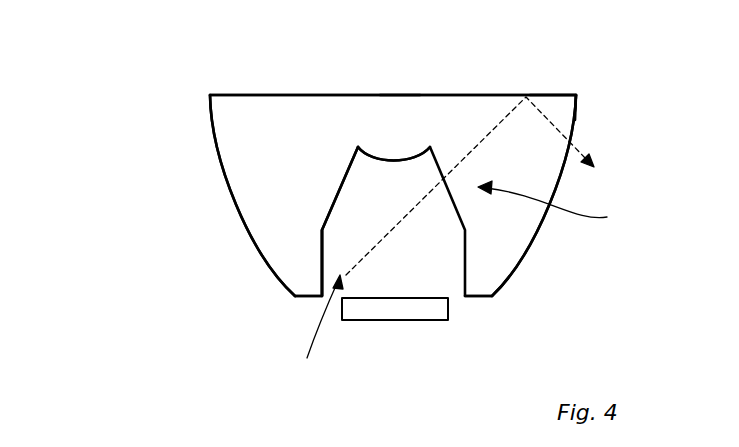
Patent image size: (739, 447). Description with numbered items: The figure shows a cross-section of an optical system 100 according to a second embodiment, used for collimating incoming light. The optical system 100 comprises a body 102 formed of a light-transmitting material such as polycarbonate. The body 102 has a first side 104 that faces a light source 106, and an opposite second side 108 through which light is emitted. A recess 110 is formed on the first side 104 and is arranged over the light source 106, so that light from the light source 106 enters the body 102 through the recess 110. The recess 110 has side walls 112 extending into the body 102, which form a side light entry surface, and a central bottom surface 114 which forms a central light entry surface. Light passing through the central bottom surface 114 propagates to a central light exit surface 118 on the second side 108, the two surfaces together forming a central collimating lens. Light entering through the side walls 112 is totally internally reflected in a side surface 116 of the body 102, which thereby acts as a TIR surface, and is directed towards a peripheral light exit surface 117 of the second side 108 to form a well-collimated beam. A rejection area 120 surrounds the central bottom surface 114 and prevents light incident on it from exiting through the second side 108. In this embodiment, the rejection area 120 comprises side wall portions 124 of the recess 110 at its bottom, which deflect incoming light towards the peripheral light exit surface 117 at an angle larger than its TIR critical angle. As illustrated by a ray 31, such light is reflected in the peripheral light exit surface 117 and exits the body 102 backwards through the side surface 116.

The optical system 100 is at (203, 59).
The body 102 is at (238, 177).
The first side 104 is at (478, 297).
The light source 106 is at (398, 318).
The second side 108 is at (265, 95).
The recess 110 is at (308, 333).
The side walls 112 is at (320, 258).
The central bottom surface 114 is at (410, 152).
The side surface 116 is at (542, 227).
The peripheral light exit surface 117 is at (550, 95).
The central light exit surface 118 is at (398, 95).
The rejection area 120 is at (566, 204).
The side wall portions 124 is at (338, 185).
The ray 31 is at (500, 120).